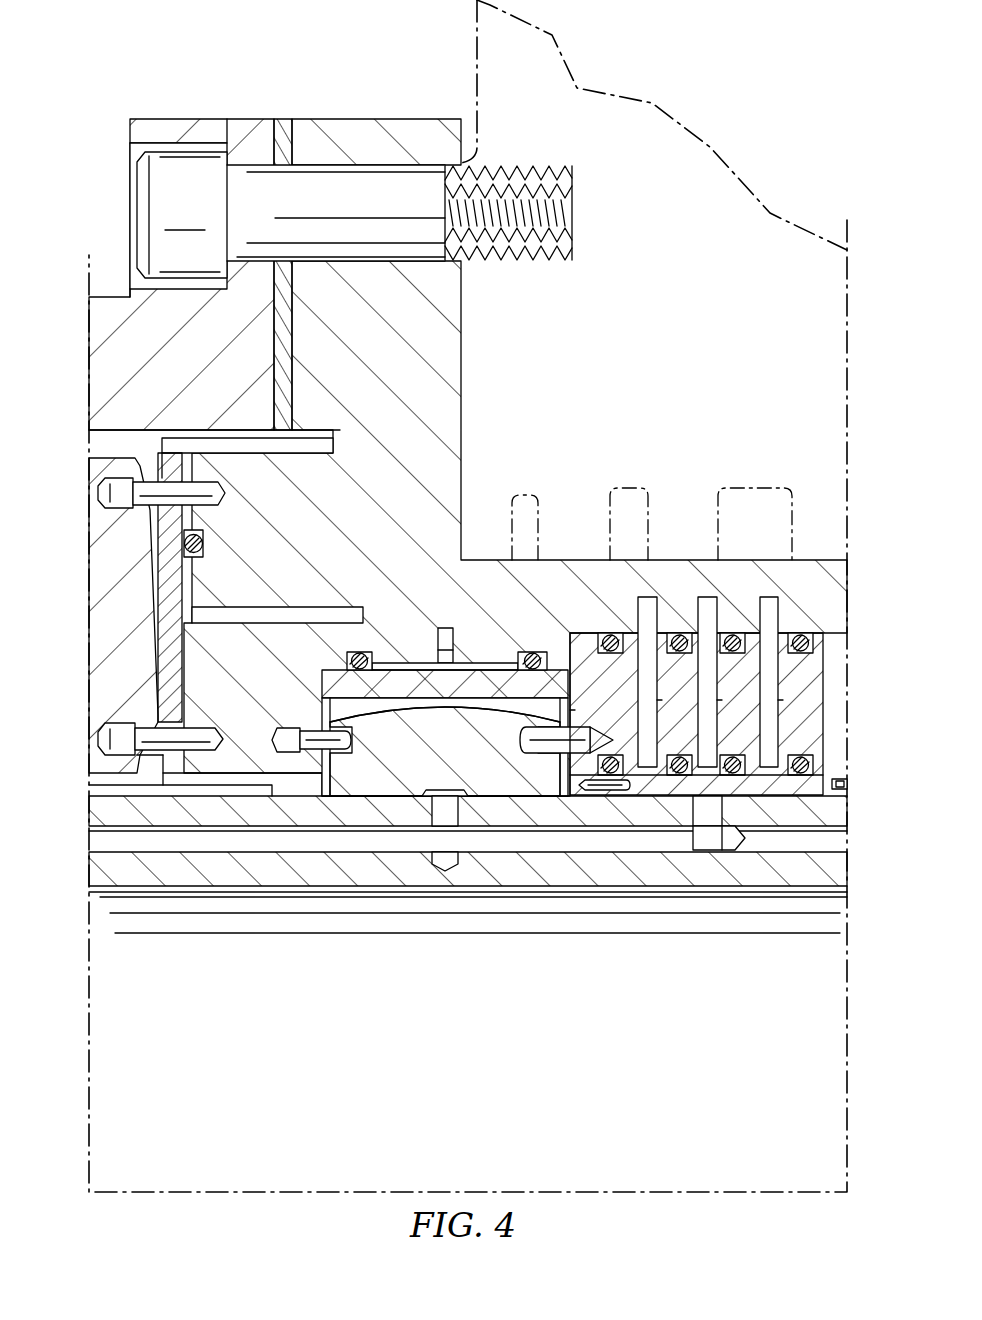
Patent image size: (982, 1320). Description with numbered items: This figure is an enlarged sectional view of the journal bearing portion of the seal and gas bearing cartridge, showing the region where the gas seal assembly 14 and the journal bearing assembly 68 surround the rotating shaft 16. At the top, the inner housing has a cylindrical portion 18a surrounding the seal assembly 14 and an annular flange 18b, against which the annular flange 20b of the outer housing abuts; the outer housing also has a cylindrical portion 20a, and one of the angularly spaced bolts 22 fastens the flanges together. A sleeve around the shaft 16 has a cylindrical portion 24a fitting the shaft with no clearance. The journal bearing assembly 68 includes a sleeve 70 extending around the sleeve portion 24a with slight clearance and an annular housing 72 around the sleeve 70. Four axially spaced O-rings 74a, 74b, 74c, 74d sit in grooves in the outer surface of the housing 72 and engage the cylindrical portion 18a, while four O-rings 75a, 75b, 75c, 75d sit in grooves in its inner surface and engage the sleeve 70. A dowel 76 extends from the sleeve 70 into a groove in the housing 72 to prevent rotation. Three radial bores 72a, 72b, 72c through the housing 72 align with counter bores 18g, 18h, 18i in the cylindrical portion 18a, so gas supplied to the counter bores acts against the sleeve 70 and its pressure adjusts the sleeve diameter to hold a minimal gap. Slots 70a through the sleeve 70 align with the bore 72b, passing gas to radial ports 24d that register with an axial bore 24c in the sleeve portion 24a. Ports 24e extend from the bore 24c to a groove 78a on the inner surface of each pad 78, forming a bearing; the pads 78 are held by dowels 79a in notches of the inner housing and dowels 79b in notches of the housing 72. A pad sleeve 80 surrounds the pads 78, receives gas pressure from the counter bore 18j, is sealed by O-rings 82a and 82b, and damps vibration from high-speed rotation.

The gas seal assembly 14 is at (238, 94).
The shaft 16 is at (486, 1078).
The cylindrical portion 18a is at (577, 567).
The annular flange 18b is at (320, 128).
The counter bore 18g is at (652, 605).
The counter bore 18h is at (717, 603).
The counter bore 18i is at (800, 600).
The counter bore 18j is at (453, 642).
The cylindrical portion 20a is at (97, 336).
The annular flange 20b is at (150, 127).
The bolt 22 is at (385, 188).
The cylindrical portion 24a is at (105, 802).
The axial bore 24c is at (108, 853).
The radial port 24d is at (705, 828).
The port 24e is at (450, 790).
The journal bearing assembly 68 is at (437, 578).
The sleeve 70 is at (848, 806).
The slot 70a is at (735, 805).
The annular housing 72 is at (828, 700).
The radial bore 72a is at (660, 720).
The radial bore 72b is at (720, 720).
The radial bore 72c is at (780, 720).
The O-ring 74a is at (618, 636).
The O-ring 74b is at (685, 635).
The O-ring 74c is at (748, 636).
The O-ring 74d is at (825, 642).
The O-ring 75a is at (605, 755).
The O-ring 75b is at (682, 755).
The O-ring 75c is at (742, 755).
The O-ring 75d is at (805, 755).
The dowel 76 is at (607, 795).
The pad 78 is at (525, 783).
The groove 78a is at (425, 790).
The dowel 79a is at (300, 728).
The dowel 79b is at (532, 735).
The pad sleeve 80 is at (322, 672).
The O-ring 82a is at (375, 653).
The O-ring 82b is at (540, 652).